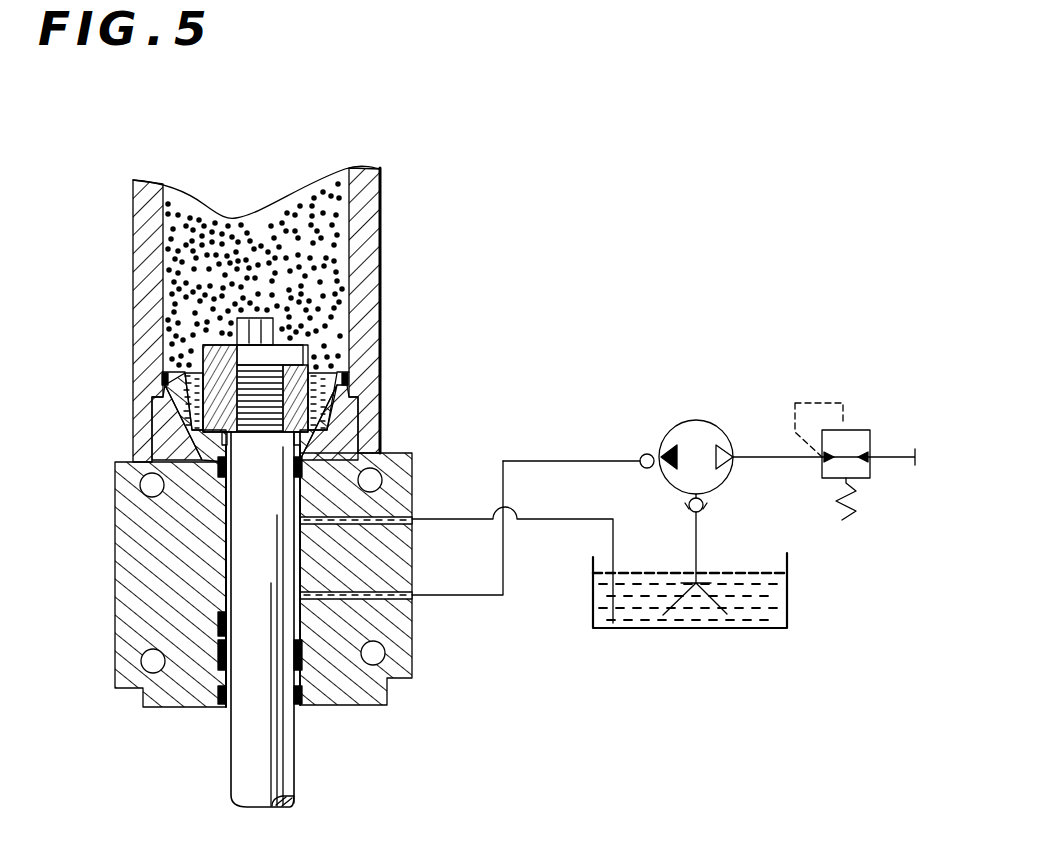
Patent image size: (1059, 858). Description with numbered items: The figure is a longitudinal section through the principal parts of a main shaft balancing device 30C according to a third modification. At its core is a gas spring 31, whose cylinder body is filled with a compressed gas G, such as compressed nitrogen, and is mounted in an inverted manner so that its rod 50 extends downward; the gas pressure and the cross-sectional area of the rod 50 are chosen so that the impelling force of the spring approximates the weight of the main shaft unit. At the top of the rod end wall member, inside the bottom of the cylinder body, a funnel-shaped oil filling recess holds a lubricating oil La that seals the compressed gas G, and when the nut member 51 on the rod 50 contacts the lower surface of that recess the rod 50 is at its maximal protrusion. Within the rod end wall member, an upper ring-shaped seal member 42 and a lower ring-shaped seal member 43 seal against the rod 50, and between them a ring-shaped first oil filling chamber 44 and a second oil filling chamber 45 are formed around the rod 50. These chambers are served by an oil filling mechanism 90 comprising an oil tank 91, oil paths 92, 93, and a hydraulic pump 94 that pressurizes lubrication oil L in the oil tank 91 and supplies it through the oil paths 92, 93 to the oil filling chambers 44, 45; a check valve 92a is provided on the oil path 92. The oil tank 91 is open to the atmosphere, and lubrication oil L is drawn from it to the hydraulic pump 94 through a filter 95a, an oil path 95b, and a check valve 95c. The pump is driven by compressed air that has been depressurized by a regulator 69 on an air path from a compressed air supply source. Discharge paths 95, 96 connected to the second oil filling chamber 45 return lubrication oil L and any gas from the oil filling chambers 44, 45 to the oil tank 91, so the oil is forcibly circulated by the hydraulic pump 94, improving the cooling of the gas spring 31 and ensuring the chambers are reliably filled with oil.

The main shaft balancing device 30C is at (120, 182).
The gas spring 31 is at (440, 230).
The compressed gas G is at (340, 300).
The nut member 51 is at (222, 342).
The lubricating oil La is at (165, 380).
The ring-shaped seal member 42 is at (153, 445).
The second oil filling chamber 45 is at (218, 524).
The first oil filling chamber 44 is at (218, 601).
The ring-shaped seal member 43 is at (230, 655).
The rod 50 is at (231, 747).
The oil path 93 is at (412, 626).
The discharge path 95 is at (398, 514).
The discharge path 96 is at (552, 519).
The oil path 92 is at (552, 460).
The check valve 92a is at (645, 453).
The hydraulic pump 94 is at (690, 420).
The oil filling mechanism 90 is at (656, 486).
The check valve 95c is at (709, 508).
The oil path 95b is at (696, 548).
The filter 95a is at (727, 597).
The oil tank 91 is at (788, 602).
The lubrication oil L is at (750, 617).
The regulator 69 is at (870, 428).